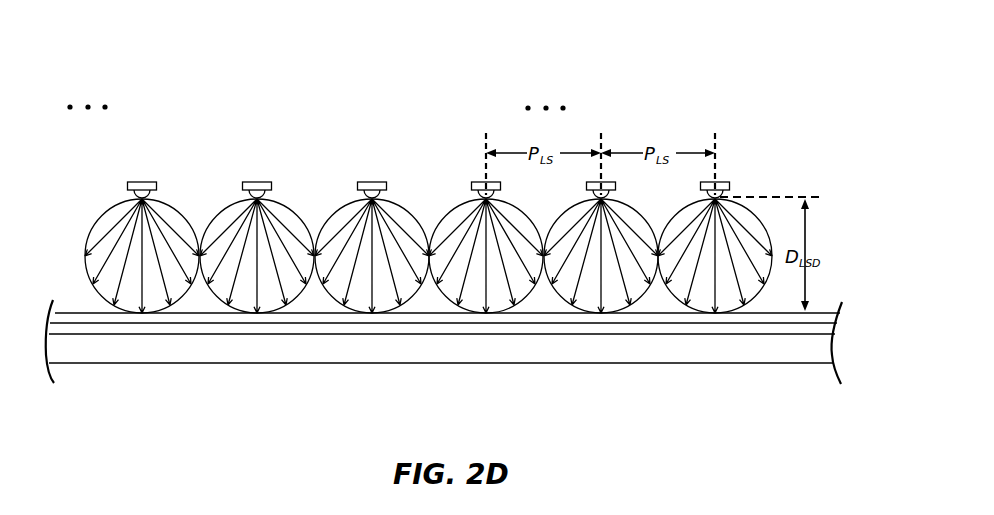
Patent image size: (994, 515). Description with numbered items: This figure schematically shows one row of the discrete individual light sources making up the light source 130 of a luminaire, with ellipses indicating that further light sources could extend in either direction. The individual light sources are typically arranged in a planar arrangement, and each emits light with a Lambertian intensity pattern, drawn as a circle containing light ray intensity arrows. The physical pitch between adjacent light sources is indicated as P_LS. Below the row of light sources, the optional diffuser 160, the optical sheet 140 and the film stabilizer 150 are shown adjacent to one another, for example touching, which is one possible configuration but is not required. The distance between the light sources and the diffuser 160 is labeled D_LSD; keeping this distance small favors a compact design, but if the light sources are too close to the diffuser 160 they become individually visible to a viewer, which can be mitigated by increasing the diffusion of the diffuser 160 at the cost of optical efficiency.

The light source 130 is at (876, 97).
The optical sheet 140 is at (833, 328).
The film stabilizer 150 is at (742, 352).
The diffuser 160 is at (827, 317).